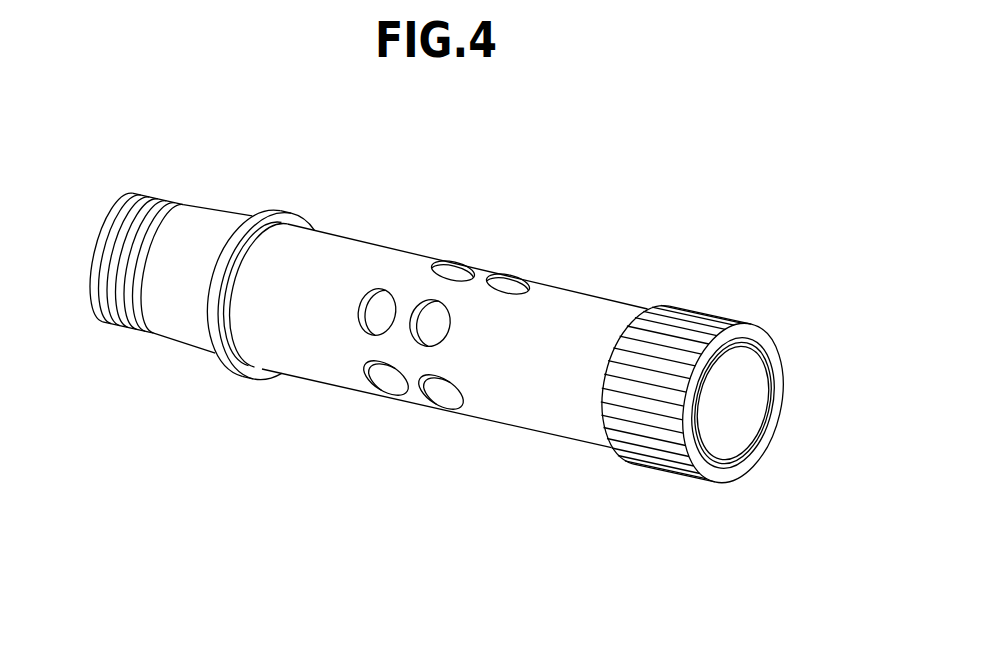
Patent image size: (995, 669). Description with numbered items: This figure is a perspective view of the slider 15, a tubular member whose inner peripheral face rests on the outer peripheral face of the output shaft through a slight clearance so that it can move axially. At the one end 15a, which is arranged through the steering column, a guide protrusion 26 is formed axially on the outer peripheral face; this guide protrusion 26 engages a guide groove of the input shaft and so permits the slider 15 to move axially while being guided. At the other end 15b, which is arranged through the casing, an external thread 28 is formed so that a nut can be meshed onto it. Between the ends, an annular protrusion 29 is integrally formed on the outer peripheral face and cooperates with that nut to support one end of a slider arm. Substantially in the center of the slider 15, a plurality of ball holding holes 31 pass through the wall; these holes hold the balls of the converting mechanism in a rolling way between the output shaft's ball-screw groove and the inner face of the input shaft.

The slider 15 is at (578, 281).
The one end of the slider 15a is at (751, 324).
The another end of the slider 15b is at (197, 219).
The guide protrusion 26 is at (668, 326).
The external thread 28 is at (148, 192).
The annular protrusion 29 is at (277, 209).
The ball holding holes 31 is at (430, 320).